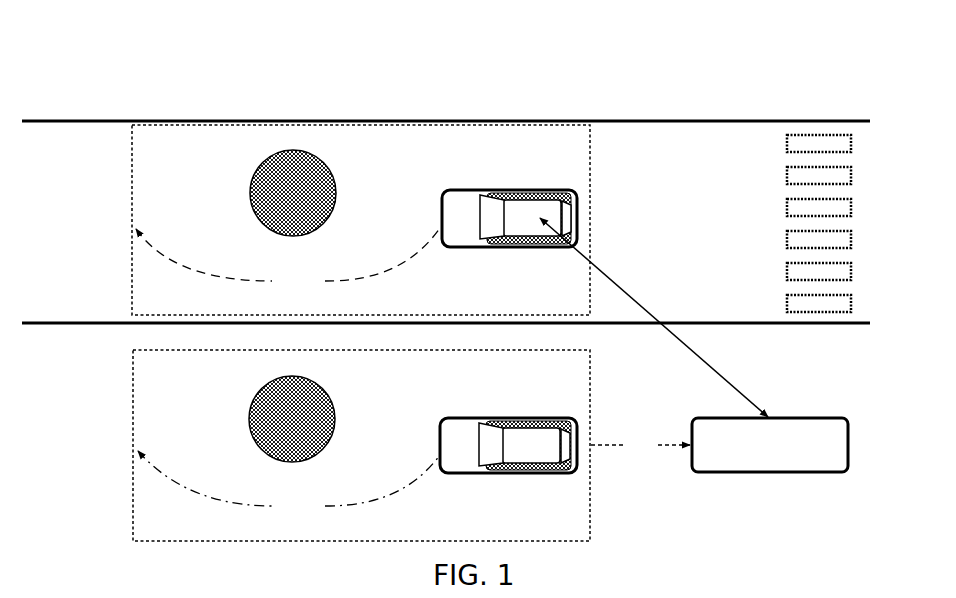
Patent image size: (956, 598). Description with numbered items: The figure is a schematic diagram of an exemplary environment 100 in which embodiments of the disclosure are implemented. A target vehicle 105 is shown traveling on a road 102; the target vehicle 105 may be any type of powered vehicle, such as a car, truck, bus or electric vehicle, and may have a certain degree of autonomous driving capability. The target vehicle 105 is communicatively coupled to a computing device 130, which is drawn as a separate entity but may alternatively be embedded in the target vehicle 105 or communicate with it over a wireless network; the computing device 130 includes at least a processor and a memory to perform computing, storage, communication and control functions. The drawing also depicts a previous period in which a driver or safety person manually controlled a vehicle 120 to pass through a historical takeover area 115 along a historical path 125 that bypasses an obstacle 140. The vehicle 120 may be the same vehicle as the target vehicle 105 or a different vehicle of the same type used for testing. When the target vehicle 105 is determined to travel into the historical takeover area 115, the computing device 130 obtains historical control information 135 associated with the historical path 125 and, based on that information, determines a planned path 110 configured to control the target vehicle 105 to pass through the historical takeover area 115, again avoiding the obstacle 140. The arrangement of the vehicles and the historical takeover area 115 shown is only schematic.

The environment 100 is at (177, 46).
The road 102 is at (73, 161).
The target vehicle 105 is at (453, 190).
The planned path 110 is at (288, 263).
The historical takeover area 115 is at (591, 176).
The vehicle 120 is at (452, 418).
The historical path 125 is at (289, 486).
The computing device 130 is at (848, 440).
The historical control information 135 is at (640, 446).
The obstacle 140 is at (314, 156).